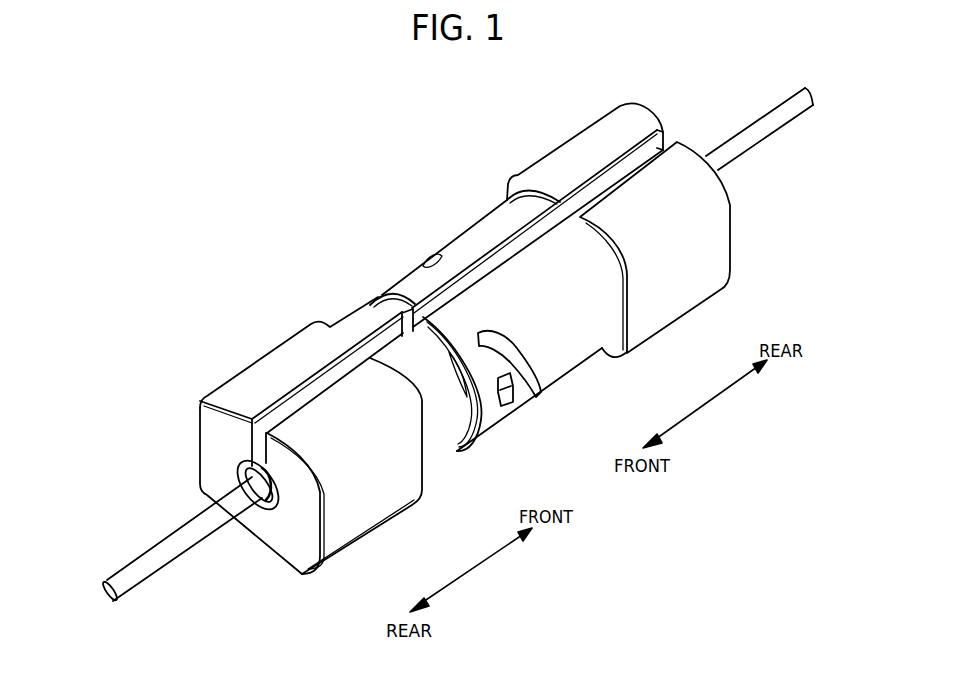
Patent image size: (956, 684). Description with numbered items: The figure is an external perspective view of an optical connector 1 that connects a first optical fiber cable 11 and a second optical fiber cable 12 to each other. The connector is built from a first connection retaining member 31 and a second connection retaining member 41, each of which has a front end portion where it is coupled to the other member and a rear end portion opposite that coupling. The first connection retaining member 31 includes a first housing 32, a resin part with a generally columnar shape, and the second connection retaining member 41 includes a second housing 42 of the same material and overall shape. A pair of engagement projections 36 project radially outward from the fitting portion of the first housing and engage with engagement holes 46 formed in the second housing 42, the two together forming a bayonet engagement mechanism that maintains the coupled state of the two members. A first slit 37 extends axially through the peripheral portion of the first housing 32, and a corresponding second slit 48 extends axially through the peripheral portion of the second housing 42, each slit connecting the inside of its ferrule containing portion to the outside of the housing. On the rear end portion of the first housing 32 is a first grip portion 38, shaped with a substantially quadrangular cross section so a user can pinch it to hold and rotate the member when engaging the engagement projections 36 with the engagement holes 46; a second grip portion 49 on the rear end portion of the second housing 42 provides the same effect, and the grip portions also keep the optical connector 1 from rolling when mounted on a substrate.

The optical connector 1 is at (366, 180).
The first optical fiber cable 11 is at (164, 547).
The second optical fiber cable 12 is at (763, 133).
The first connection retaining member 31 is at (328, 316).
The first housing 32 is at (264, 371).
The engagement projections 36 is at (511, 383).
The first slit 37 is at (312, 393).
The first grip portion 38 is at (336, 545).
The second connection retaining member 41 is at (617, 365).
The second housing 42 is at (680, 303).
The engagement holes 46 is at (531, 374).
The second slit 48 is at (592, 193).
The second grip portion 49 is at (620, 114).